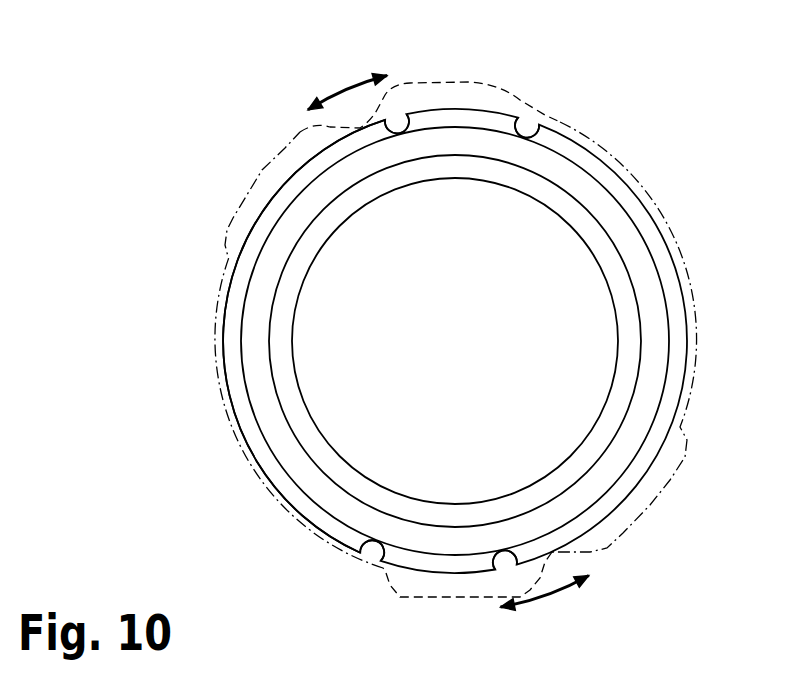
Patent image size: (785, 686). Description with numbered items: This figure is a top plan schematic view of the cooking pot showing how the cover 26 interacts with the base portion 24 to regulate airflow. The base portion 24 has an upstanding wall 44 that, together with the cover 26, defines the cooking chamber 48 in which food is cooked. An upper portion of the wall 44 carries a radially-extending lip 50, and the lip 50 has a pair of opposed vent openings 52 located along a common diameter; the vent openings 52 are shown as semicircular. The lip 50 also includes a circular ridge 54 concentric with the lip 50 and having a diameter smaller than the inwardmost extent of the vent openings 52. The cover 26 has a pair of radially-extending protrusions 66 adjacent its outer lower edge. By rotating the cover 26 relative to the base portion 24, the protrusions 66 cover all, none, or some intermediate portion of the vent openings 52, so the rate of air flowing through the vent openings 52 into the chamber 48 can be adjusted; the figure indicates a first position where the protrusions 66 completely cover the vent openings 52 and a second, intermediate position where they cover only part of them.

The base portion 24 is at (636, 193).
The cover 26 is at (565, 102).
The upstanding wall 44 is at (455, 341).
The cooking chamber 48 is at (455, 341).
The lip 50 is at (335, 530).
The vent openings 52 is at (403, 122).
The circular ridge 54 is at (320, 502).
The protrusions 66 is at (466, 80).